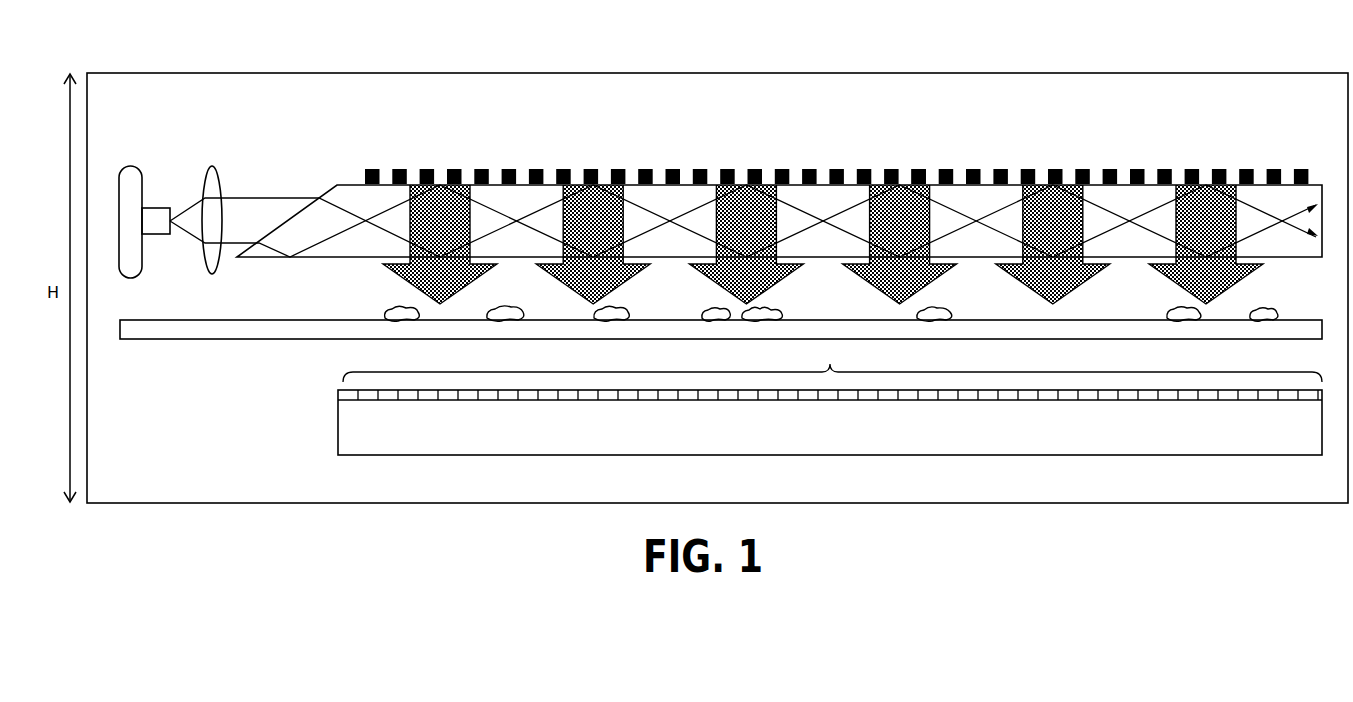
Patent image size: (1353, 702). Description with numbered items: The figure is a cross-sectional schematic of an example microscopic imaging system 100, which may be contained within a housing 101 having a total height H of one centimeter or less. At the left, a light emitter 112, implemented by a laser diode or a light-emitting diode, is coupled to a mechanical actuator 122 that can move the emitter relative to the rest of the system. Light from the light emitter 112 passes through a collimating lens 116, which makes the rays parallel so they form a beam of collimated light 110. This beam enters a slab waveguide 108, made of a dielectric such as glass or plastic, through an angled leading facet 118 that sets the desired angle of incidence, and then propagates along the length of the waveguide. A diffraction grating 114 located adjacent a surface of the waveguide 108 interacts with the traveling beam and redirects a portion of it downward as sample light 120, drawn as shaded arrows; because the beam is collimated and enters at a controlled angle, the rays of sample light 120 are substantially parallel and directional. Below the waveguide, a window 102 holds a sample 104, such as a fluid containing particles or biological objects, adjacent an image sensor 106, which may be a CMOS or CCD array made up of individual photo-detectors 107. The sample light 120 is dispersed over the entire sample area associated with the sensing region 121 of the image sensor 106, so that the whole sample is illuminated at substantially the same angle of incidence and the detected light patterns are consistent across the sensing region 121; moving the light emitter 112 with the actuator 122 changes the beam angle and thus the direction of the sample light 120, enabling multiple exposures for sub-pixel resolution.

The microscopic imaging system 100 is at (1068, 121).
The housing 101 is at (467, 73).
The window 102 is at (232, 333).
The sample 104 is at (374, 312).
The image sensor 106 is at (338, 420).
The photo-detectors 107 is at (490, 400).
The slab waveguide 108 is at (677, 197).
The beam of collimated light 110 is at (270, 197).
The light emitter 112 is at (163, 207).
The diffraction grating 114 is at (912, 172).
The collimating lens 116 is at (220, 268).
The angled leading facet 118 is at (323, 192).
The sample light 120 is at (707, 280).
The sensing region 121 is at (832, 362).
The mechanical actuator 122 is at (143, 267).